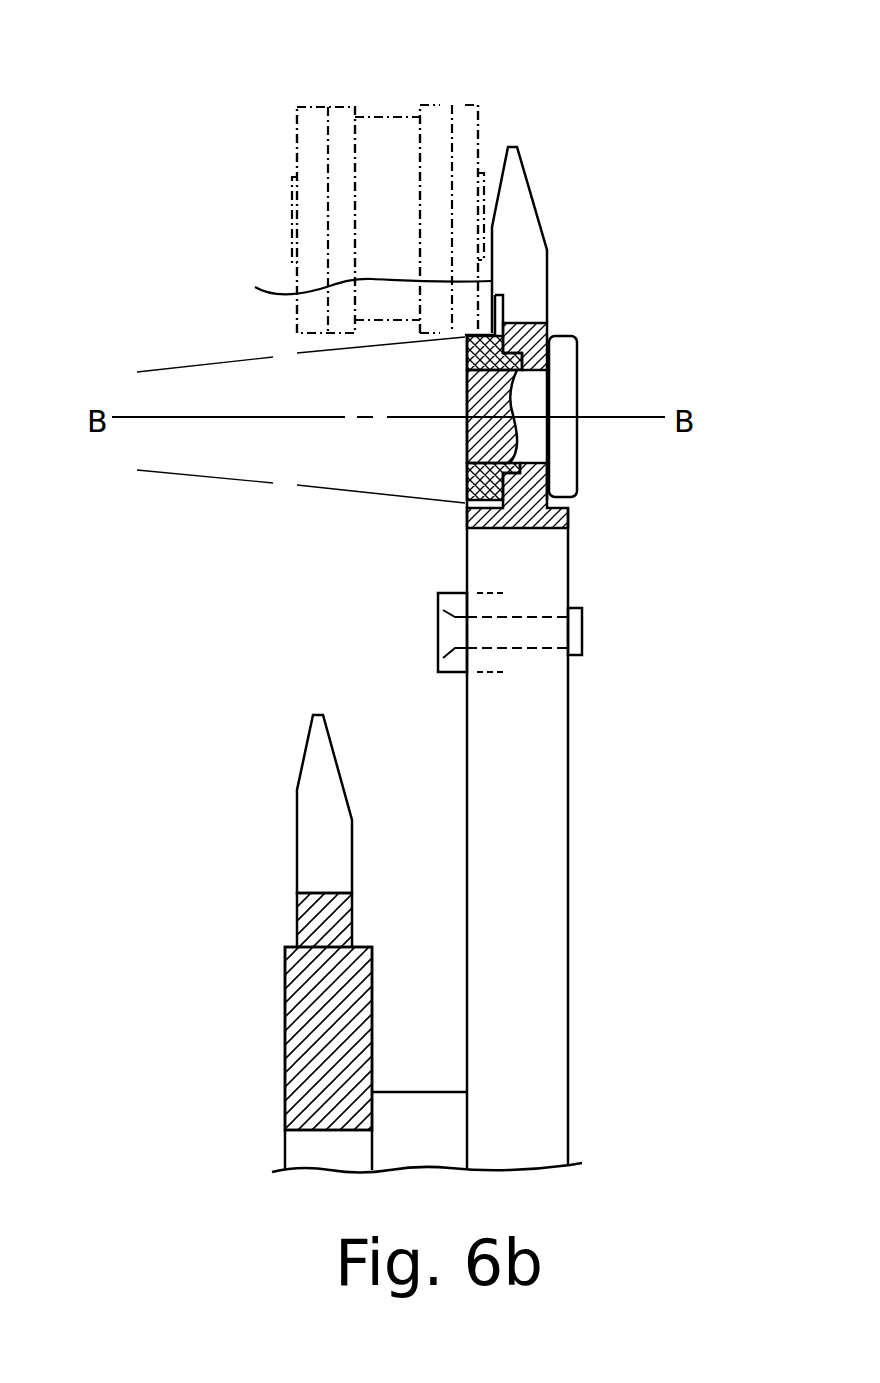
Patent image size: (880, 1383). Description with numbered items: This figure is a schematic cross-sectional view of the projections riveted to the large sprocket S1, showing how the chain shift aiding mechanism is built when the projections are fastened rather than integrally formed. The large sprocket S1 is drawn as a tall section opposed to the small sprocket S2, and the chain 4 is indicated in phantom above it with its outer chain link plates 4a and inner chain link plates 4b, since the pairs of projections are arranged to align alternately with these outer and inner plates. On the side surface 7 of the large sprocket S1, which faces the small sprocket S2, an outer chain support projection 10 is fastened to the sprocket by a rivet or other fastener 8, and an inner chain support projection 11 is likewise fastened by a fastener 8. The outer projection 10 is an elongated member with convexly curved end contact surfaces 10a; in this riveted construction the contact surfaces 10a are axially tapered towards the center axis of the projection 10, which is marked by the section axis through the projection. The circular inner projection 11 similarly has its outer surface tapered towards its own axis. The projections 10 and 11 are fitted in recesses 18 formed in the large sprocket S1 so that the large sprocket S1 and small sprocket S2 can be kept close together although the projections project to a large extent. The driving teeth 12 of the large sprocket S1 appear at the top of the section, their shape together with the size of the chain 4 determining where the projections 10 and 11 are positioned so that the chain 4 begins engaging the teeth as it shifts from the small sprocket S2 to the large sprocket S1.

The chain 4 is at (297, 123).
The outer chain link plates 4a is at (465, 105).
The inner chain link plates 4b is at (435, 105).
The side surface 7 is at (364, 284).
The rivet or other fastener 8 is at (578, 404).
The outer chain support projection 10 is at (465, 432).
The convexly curved end contact surfaces 10a is at (466, 333).
The inner chain support projection 11 is at (438, 633).
The driving teeth 12 is at (515, 229).
The recesses 18 is at (465, 507).
The large sprocket S1 is at (568, 568).
The small sprocket S2 is at (285, 1000).